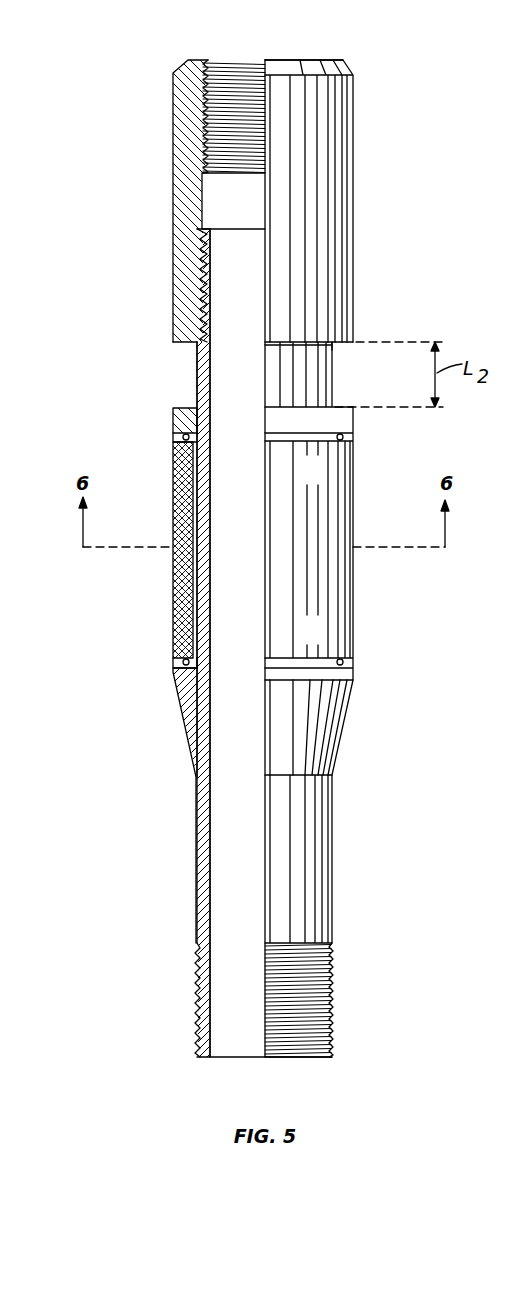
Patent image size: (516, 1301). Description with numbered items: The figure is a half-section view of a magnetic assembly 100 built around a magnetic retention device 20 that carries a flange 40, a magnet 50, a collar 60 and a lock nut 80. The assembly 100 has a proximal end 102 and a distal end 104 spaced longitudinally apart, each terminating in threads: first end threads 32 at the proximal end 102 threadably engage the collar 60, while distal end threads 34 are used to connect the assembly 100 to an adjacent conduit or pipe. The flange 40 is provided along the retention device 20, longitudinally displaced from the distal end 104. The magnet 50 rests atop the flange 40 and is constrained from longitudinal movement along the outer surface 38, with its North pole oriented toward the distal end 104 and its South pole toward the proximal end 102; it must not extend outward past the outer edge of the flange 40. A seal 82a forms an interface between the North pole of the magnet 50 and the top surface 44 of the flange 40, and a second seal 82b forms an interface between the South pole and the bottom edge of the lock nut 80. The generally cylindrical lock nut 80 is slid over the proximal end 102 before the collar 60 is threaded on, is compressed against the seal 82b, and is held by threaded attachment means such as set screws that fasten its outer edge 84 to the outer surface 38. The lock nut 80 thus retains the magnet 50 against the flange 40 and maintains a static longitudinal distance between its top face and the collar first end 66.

The magnetic assembly 100 is at (129, 42).
The proximal end 102 is at (316, 61).
The distal end 104 is at (296, 1058).
The magnetic retention device 20 is at (334, 862).
The first end threads 32 is at (200, 110).
The distal end threads 34 is at (334, 1003).
The outer surface 38 is at (333, 372).
The flange 40 is at (180, 708).
The top surface 44 is at (174, 664).
The magnet 50 is at (178, 580).
The collar 60 is at (355, 207).
The collar first end 66 is at (343, 344).
The lock nut 80 is at (174, 401).
The seal 82a is at (346, 663).
The seal 82b is at (346, 438).
The outer edge 84 is at (354, 416).